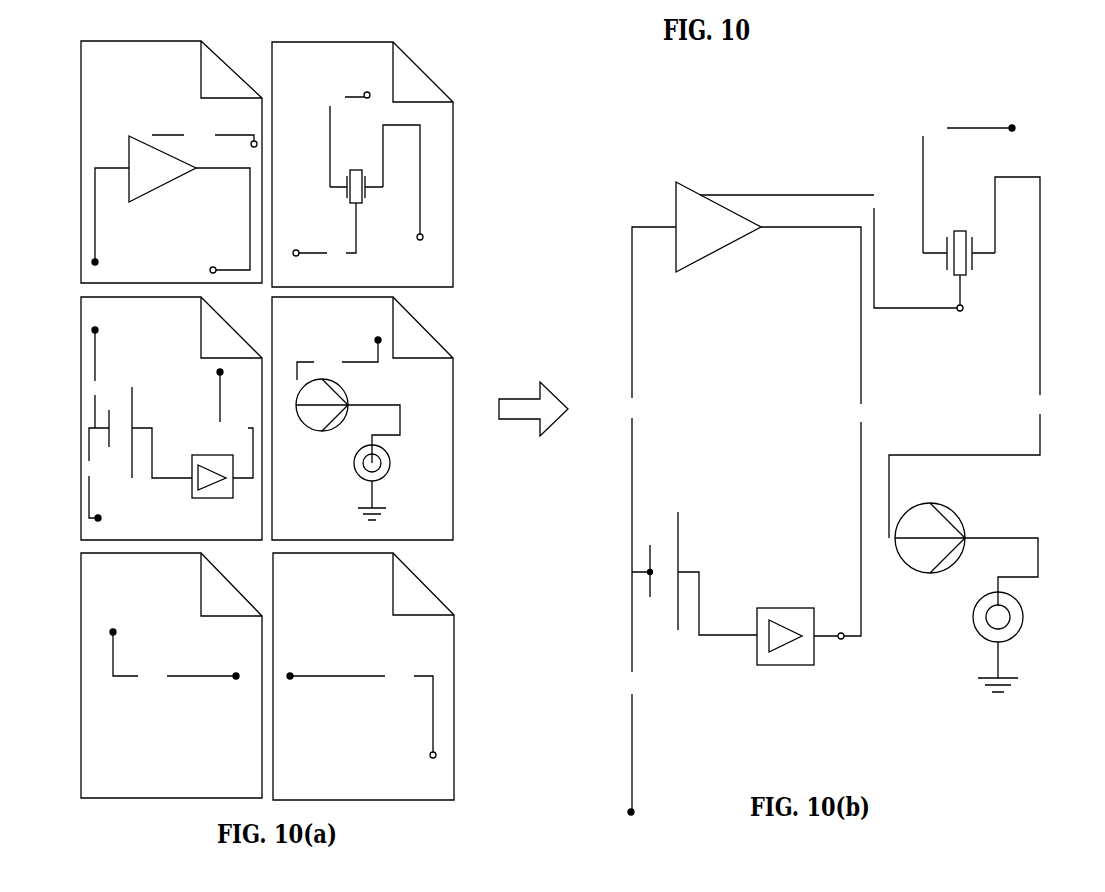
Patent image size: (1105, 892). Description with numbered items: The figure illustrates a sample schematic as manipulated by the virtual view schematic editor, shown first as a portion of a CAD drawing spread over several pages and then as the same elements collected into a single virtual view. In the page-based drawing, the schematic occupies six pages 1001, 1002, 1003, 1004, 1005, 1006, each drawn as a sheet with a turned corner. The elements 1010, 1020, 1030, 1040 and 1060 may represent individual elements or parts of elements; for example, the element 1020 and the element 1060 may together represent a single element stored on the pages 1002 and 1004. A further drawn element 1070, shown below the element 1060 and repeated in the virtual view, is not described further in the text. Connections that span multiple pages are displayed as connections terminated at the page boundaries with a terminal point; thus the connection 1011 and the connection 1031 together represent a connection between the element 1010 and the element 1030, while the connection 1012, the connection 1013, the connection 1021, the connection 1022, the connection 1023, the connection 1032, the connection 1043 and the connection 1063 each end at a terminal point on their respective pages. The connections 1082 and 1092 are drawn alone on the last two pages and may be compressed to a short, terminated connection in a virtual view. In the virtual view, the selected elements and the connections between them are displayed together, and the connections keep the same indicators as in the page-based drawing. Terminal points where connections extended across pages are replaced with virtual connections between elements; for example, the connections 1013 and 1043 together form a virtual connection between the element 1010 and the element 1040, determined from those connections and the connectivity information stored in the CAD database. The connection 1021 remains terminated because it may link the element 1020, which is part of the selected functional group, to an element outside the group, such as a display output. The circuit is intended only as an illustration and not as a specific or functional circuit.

In FIG. 10a, the page 1001 is at (171, 162).
In FIG. 10a, the page 1002 is at (362, 164).
In FIG. 10a, the page 1003 is at (169, 418).
In FIG. 10a, the page 1004 is at (362, 418).
In FIG. 10a, the page 1005 is at (171, 675).
In FIG. 10a, the page 1006 is at (363, 676).
In FIG. 10a, the element 1010 is at (162, 169).
In FIG. 10b, the element 1010 is at (718, 227).
In FIG. 10a, the connection 1011 is at (106, 216).
In FIG. 10b, the connection 1011 is at (638, 399).
In FIG. 10a, the connection 1012 is at (204, 137).
In FIG. 10b, the connection 1012 is at (831, 252).
In FIG. 10a, the connection 1013 is at (229, 220).
In FIG. 10b, the connection 1013 is at (827, 433).
In FIG. 10a, the element 1020 is at (356, 175).
In FIG. 10b, the element 1020 is at (959, 254).
In FIG. 10a, the connection 1021 is at (344, 139).
In FIG. 10b, the connection 1021 is at (967, 187).
In FIG. 10a, the connection 1022 is at (324, 231).
In FIG. 10b, the connection 1022 is at (831, 252).
In FIG. 10a, the connection 1023 is at (409, 182).
In FIG. 10b, the connection 1023 is at (980, 357).
In FIG. 10a, the element 1030 is at (143, 439).
In FIG. 10b, the element 1030 is at (694, 581).
In FIG. 10a, the connection 1031 is at (96, 377).
In FIG. 10b, the connection 1031 is at (638, 399).
In FIG. 10a, the connection 1032 is at (89, 474).
In FIG. 10b, the connection 1032 is at (632, 693).
In FIG. 10a, the element 1040 is at (212, 486).
In FIG. 10b, the element 1040 is at (797, 645).
In FIG. 10a, the connection 1043 is at (235, 423).
In FIG. 10b, the connection 1043 is at (827, 433).
In FIG. 10a, the element 1060 is at (347, 414).
In FIG. 10b, the element 1060 is at (966, 548).
In FIG. 10a, the connection 1063 is at (339, 358).
In FIG. 10b, the connection 1063 is at (980, 357).
In FIG. 10a, the antenna with ground 1070 is at (372, 492).
In FIG. 10b, the antenna with ground 1070 is at (998, 650).
In FIG. 10a, the connection 1082 is at (174, 656).
In FIG. 10b, the connection 1082 is at (632, 693).
In FIG. 10a, the connection 1092 is at (361, 713).
In FIG. 10b, the connection 1092 is at (632, 693).